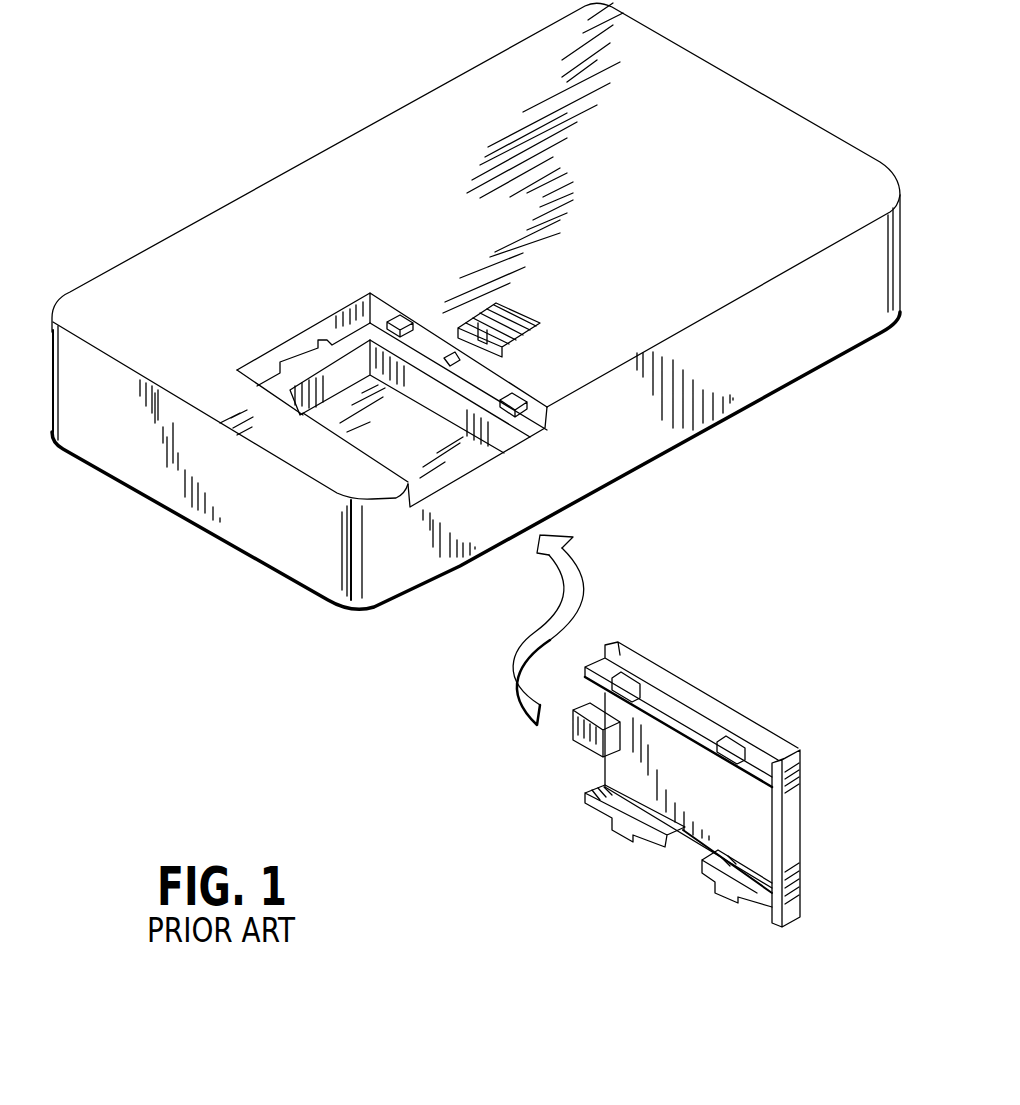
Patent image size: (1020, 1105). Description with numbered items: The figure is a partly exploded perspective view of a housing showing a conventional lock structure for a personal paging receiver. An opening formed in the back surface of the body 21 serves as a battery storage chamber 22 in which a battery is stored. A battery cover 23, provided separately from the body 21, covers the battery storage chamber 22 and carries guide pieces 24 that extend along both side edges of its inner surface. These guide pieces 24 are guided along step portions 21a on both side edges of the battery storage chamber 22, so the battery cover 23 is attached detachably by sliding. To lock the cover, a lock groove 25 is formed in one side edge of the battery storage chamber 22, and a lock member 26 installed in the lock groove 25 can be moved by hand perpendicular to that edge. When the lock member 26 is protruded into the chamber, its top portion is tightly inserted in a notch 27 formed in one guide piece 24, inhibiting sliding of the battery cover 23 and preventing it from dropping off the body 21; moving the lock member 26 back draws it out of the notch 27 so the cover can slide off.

The body 21 is at (728, 107).
The step portions 21a is at (520, 433).
The battery storage chamber 22 is at (375, 438).
The battery cover 23 is at (680, 774).
The guide pieces 24 is at (658, 702).
The lock groove 25 is at (534, 282).
The lock member 26 is at (480, 323).
The notch 27 is at (690, 843).